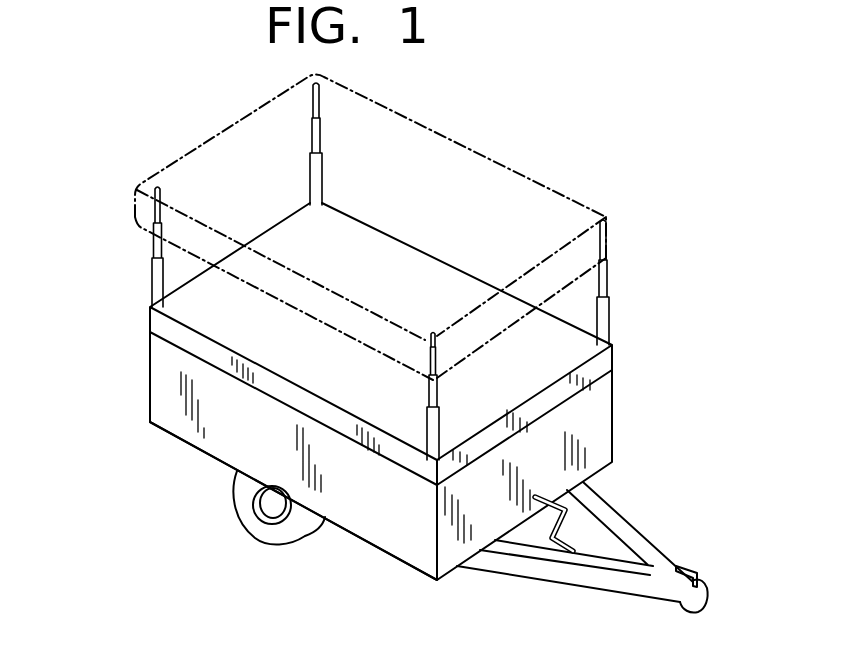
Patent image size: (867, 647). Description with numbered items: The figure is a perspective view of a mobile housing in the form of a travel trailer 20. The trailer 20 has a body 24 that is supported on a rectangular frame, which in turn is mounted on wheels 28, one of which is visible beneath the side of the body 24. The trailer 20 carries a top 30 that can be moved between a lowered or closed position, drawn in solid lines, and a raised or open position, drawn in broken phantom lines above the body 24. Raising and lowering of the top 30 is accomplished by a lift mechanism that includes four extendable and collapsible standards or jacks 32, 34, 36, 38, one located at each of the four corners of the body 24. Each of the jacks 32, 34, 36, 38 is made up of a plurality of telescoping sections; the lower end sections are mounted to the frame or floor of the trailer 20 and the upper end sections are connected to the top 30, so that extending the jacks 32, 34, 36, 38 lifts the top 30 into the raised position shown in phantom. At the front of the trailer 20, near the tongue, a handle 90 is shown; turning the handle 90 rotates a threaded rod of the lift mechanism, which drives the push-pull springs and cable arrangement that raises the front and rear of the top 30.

The travel trailer 20 is at (162, 403).
The body 24 is at (223, 445).
The wheels 28 is at (263, 528).
The top 30 is at (558, 200).
The jack 32 is at (435, 430).
The jack 34 is at (603, 323).
The jack 36 is at (322, 180).
The jack 38 is at (153, 282).
The handle 90 is at (567, 520).